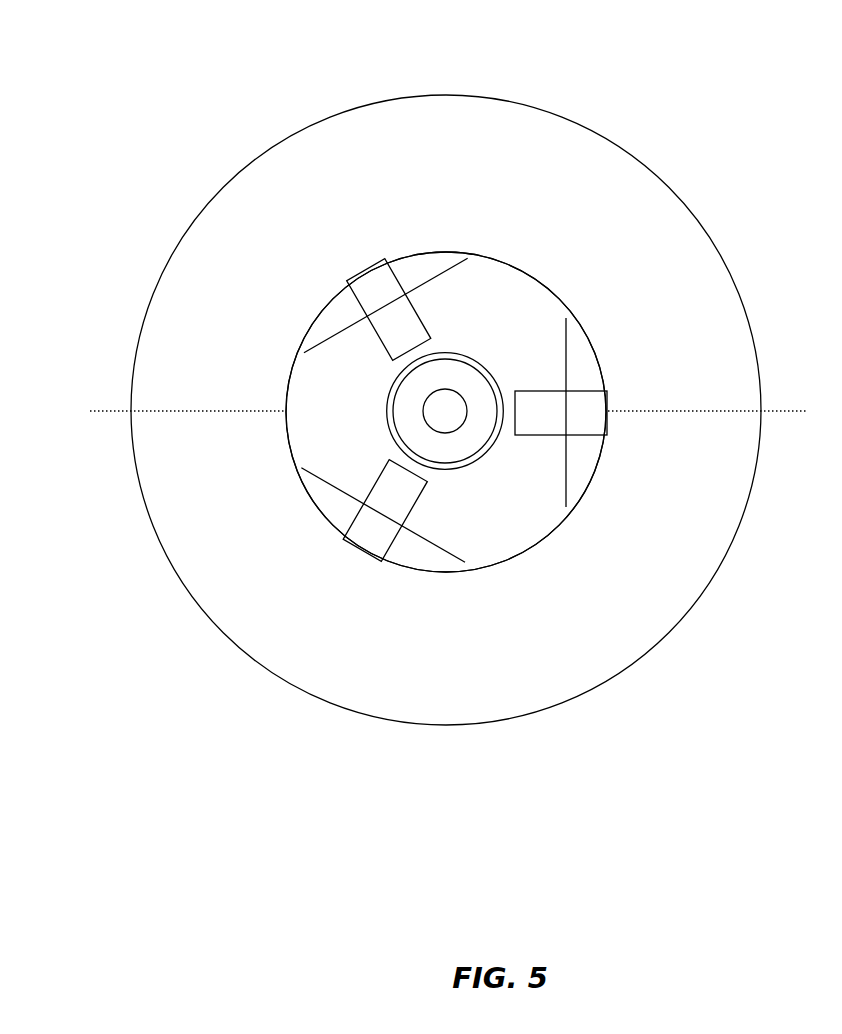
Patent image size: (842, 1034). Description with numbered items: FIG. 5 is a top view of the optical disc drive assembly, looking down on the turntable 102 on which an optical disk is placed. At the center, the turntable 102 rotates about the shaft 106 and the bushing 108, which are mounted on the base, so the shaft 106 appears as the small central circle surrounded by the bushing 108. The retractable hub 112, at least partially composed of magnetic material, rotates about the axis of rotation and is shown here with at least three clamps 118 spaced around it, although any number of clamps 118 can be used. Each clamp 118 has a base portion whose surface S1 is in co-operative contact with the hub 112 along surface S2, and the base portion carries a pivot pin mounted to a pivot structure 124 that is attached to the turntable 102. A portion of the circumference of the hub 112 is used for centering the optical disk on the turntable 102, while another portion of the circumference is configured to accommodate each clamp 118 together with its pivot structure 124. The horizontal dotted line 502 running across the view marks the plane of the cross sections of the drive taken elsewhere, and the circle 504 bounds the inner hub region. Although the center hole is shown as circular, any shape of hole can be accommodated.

The turntable 102 is at (502, 142).
The shaft 106 is at (447, 407).
The bushing 108 is at (477, 417).
The hub 112 is at (345, 362).
The clamp 118 is at (372, 275).
The pivot structure 124 is at (415, 273).
The axis line 502 is at (112, 413).
The inner circle 504 is at (520, 273).
The surface S2 is at (420, 312).